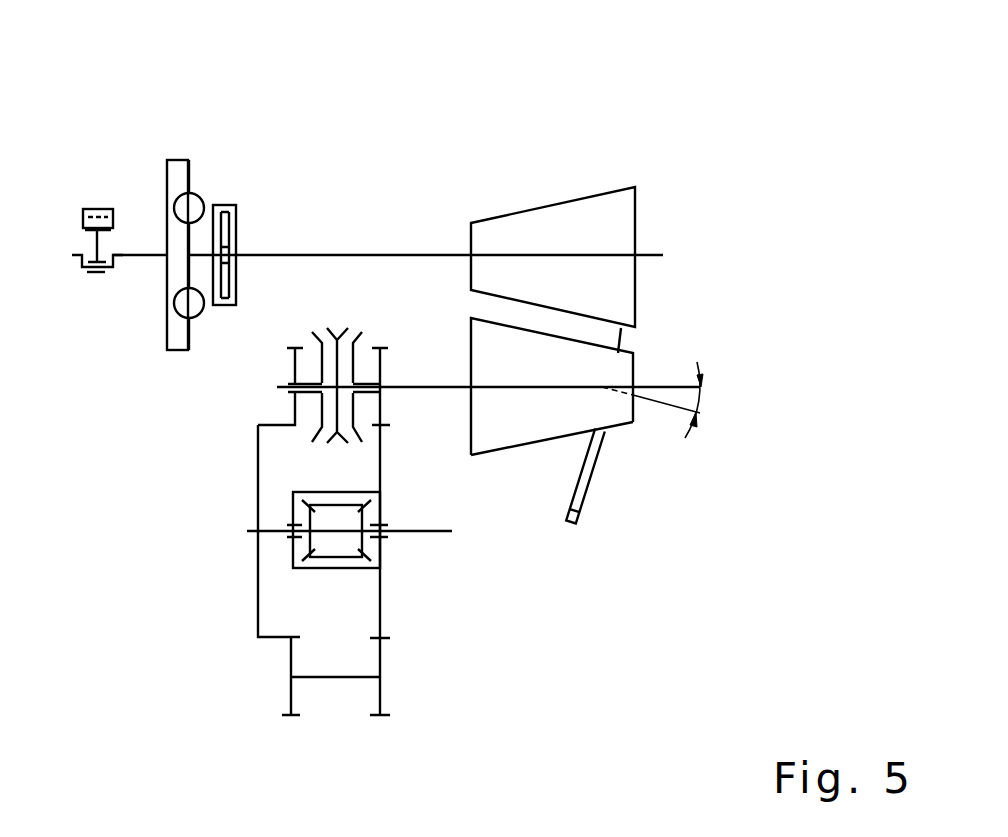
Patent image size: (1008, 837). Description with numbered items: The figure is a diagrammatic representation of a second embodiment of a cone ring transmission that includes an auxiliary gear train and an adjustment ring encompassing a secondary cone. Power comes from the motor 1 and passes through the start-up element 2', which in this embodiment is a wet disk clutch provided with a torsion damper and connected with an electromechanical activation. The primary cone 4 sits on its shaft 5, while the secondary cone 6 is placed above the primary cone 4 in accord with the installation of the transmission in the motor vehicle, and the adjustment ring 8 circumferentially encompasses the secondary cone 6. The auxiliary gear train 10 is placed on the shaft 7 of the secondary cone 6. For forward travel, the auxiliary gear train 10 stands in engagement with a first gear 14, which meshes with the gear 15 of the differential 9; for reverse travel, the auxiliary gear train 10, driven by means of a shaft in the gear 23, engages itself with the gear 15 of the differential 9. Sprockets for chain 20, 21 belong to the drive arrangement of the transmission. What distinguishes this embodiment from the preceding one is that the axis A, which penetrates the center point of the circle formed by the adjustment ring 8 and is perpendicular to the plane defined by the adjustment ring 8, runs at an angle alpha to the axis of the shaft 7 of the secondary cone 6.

The motor 1 is at (105, 197).
The start-up element 2' is at (235, 153).
The primary cone 4 is at (583, 195).
The shaft 5 is at (648, 257).
The secondary cone 6 is at (488, 458).
The shaft 7 is at (650, 386).
The adjustment ring 8 is at (580, 515).
The axis A is at (698, 413).
The differential 9 is at (320, 570).
The auxiliary gear train 10 is at (325, 346).
The gear 14 is at (387, 348).
The gear 15 is at (380, 475).
The sprocket for chain 20 is at (293, 365).
The sprocket for chain 21 is at (288, 702).
The gear 23 is at (380, 695).